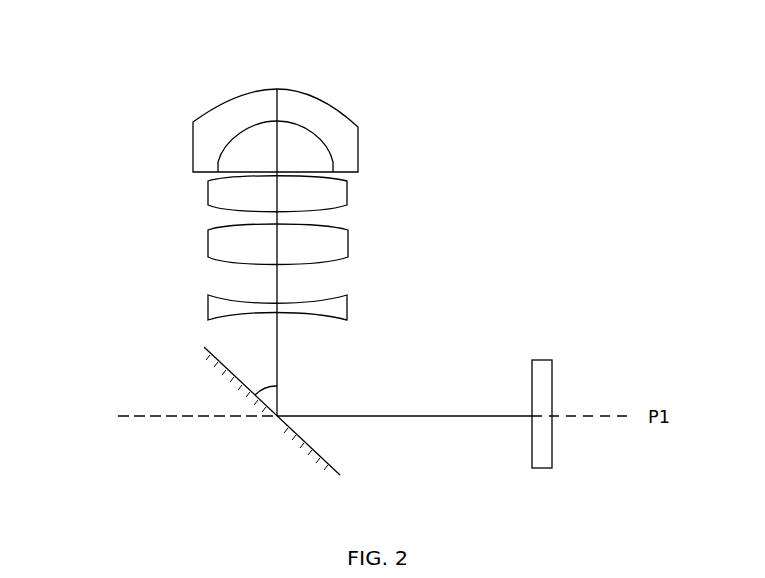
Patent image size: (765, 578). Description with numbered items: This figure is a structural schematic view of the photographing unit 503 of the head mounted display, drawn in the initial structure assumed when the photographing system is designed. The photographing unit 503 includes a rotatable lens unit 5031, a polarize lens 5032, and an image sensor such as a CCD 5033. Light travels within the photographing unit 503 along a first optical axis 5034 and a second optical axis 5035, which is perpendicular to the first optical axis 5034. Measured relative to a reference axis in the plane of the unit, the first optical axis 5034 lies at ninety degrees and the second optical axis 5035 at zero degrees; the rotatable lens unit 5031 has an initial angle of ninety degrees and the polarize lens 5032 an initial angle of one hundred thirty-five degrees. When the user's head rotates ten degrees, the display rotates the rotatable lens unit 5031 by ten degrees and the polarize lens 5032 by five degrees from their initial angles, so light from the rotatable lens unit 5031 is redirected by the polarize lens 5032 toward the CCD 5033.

The photographing unit 503 is at (344, 47).
The rotatable lens unit 5031 is at (373, 323).
The polarize lens 5032 is at (217, 367).
The image sensor (CCD) 5033 is at (548, 450).
The first optical axis 5034 is at (278, 373).
The second optical axis 5035 is at (437, 457).